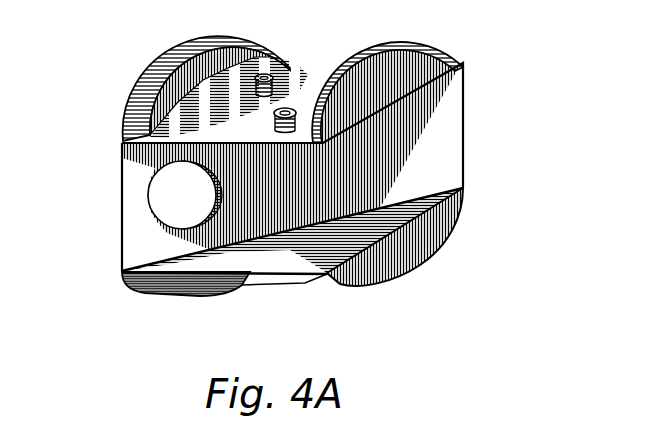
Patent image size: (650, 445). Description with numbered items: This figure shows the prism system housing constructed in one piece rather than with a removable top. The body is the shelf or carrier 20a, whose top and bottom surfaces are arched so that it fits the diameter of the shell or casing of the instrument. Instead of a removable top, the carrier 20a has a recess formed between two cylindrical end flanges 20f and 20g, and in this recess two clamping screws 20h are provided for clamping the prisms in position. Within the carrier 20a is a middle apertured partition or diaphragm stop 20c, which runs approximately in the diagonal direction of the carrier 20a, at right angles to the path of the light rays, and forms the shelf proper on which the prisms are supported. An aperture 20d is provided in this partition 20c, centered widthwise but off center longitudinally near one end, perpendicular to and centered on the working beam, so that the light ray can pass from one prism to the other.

The shelf or carrier 20a is at (330, 255).
The apertured partition or diaphragm stop 20c is at (438, 153).
The aperture 20d is at (174, 200).
The cylindrical end flange 20f is at (160, 78).
The cylindrical end flange 20g is at (443, 53).
The clamping screws 20h is at (274, 86).